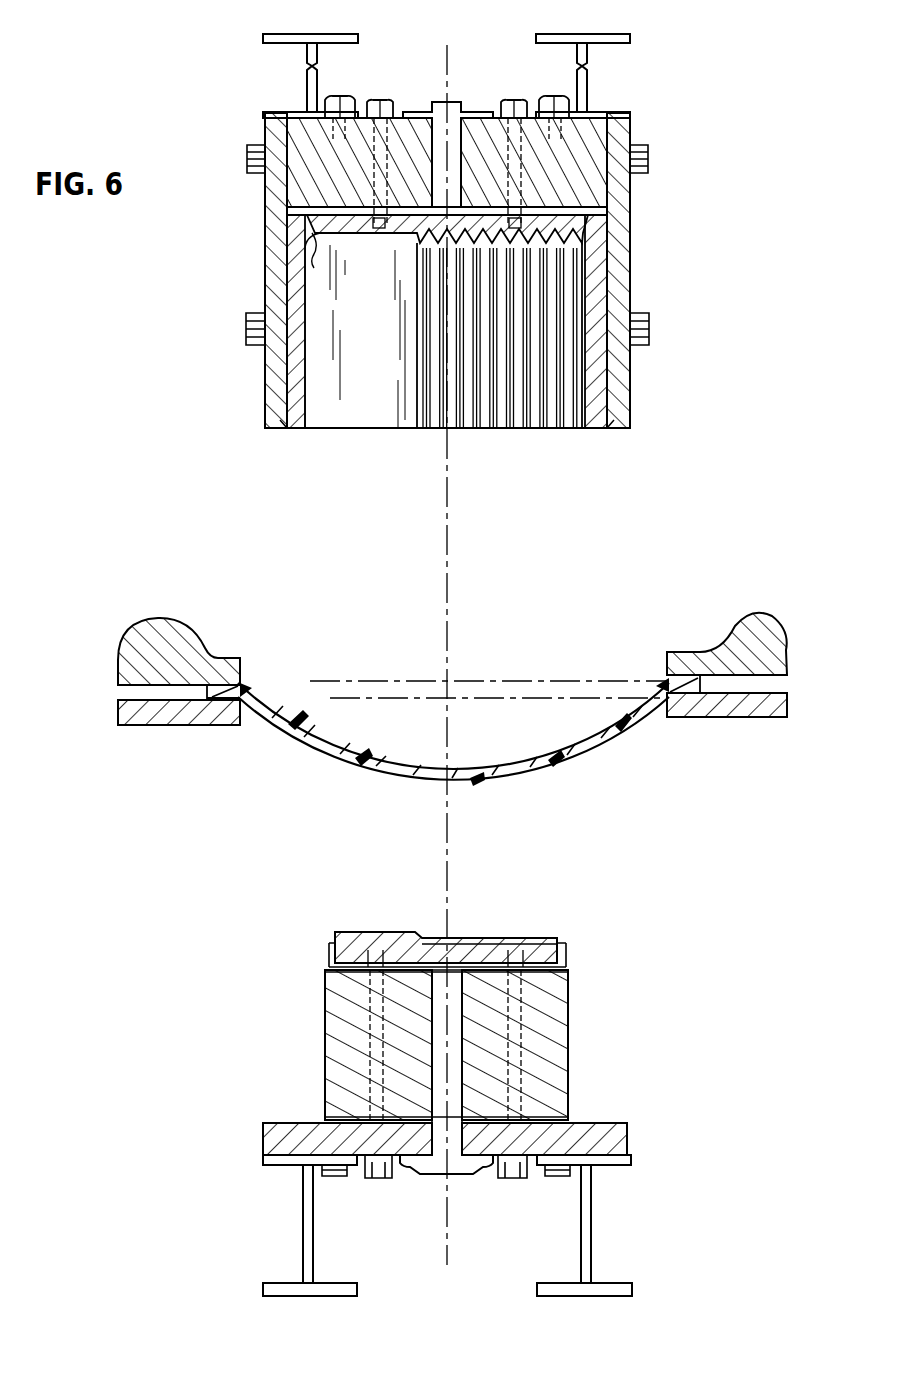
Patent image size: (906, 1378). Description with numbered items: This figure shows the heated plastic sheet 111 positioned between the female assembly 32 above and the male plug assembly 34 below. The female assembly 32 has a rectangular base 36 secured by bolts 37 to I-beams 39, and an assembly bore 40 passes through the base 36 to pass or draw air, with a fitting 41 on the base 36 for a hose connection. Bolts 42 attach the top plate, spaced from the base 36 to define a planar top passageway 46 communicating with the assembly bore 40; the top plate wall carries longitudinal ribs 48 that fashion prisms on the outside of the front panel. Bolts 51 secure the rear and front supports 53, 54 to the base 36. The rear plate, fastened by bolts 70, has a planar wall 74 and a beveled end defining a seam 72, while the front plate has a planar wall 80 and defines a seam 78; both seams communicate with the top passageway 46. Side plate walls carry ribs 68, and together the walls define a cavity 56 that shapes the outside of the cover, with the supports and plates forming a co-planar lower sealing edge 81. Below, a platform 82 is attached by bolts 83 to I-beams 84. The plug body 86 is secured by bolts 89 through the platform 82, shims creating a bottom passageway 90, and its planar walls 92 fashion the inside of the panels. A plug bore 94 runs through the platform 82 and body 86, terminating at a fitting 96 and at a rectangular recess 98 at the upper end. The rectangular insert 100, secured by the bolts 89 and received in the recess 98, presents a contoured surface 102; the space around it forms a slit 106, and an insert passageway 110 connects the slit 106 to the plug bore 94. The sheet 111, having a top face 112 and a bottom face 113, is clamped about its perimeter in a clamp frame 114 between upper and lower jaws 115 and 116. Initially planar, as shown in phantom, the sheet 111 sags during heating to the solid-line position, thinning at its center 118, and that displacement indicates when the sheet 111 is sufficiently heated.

The female assembly 32 is at (682, 150).
The male plug assembly 34 is at (684, 1000).
The rectangular base 36 is at (586, 140).
The bolts 37 is at (342, 96).
The I-beams 39 is at (336, 34).
The assembly bore 40 is at (455, 118).
The fitting 41 is at (468, 118).
The bolts 42 is at (382, 100).
The top passageway 46 is at (608, 210).
The longitudinal ribs 48 is at (417, 244).
The bolts 51 is at (246, 158).
The rear support 53 is at (612, 252).
The front support 54 is at (266, 222).
The cavity 56 is at (366, 334).
The ribs 68 is at (418, 276).
The bolts 70 is at (245, 325).
The seam 72 is at (590, 226).
The planar wall 74 is at (600, 280).
The seam 78 is at (325, 259).
The planar wall 80 is at (306, 372).
The lower sealing edge 81 is at (287, 430).
The platform 82 is at (617, 1128).
The bolts 83 is at (334, 1178).
The I-beams 84 is at (314, 1244).
The plug body 86 is at (553, 1058).
The bolts 89 is at (380, 1178).
The bottom passageway 90 is at (568, 972).
The walls 92 is at (323, 1033).
The plug bore 94 is at (458, 1136).
The fitting 96 is at (427, 1164).
The rectangular recess 98 is at (568, 943).
The rectangular insert 100 is at (513, 937).
The contoured surface 102 is at (380, 932).
The slit 106 is at (332, 943).
The insert passageway 110 is at (474, 953).
The plastic sheet 111 is at (620, 680).
The top face 112 is at (242, 688).
The bottom face 113 is at (330, 700).
The clamp frame 114 is at (802, 622).
The upper jaw 115 is at (158, 632).
The lower jaw 116 is at (146, 718).
The center 118 is at (450, 779).